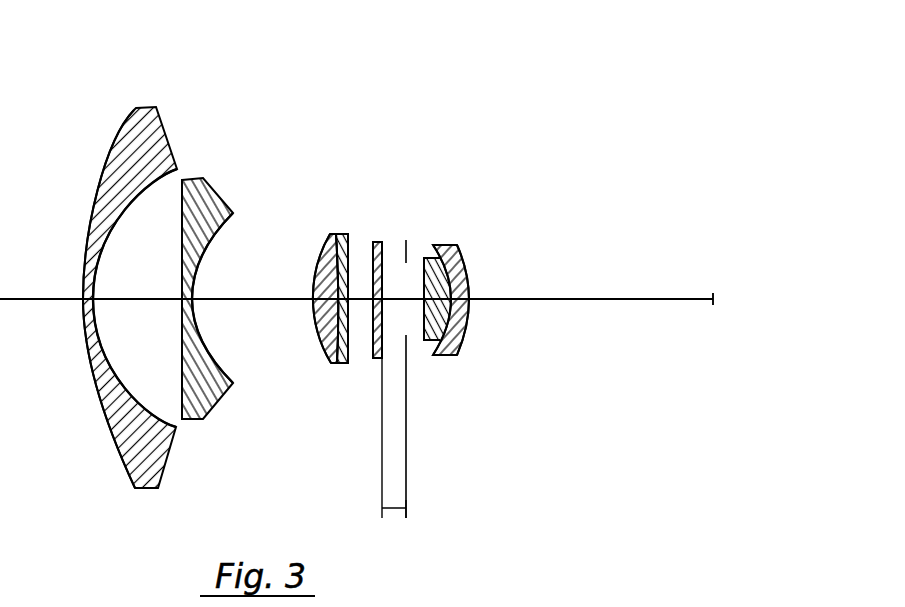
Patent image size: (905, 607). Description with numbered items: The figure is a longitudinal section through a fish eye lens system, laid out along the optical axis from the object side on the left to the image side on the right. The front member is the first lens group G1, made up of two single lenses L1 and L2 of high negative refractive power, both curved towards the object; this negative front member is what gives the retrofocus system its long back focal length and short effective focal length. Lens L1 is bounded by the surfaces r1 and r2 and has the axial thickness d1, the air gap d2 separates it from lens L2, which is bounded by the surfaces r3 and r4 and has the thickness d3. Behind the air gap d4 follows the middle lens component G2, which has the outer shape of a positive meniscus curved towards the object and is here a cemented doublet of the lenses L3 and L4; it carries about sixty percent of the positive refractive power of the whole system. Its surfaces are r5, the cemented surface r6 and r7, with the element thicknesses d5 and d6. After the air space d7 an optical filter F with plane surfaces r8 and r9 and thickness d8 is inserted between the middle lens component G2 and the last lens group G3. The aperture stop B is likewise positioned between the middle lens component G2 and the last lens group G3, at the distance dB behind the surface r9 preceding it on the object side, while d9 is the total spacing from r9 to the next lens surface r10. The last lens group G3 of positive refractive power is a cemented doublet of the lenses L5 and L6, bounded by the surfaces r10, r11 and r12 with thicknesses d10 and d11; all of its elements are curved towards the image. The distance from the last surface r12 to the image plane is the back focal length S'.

The first lens group G1 is at (265, 45).
The middle lens component G2 is at (355, 62).
The last lens group G3 is at (565, 60).
The first lens L1 is at (138, 265).
The second lens L2 is at (227, 241).
The third lens L3 is at (326, 213).
The fourth lens L4 is at (368, 210).
The fifth lens L5 is at (466, 207).
The sixth lens L6 is at (501, 207).
The first lens surface r1 is at (124, 135).
The second lens surface r2 is at (165, 158).
The third lens surface r3 is at (182, 198).
The fourth lens surface r4 is at (238, 220).
The fifth lens surface r5 is at (323, 242).
The sixth lens surface r6 is at (335, 234).
The seventh lens surface r7 is at (360, 268).
The eighth lens surface r8 is at (373, 242).
The ninth lens surface r9 is at (373, 243).
The tenth lens surface r10 is at (425, 258).
The eleventh lens surface r11 is at (474, 259).
The twelfth lens surface r12 is at (465, 268).
The optical filter F is at (380, 242).
The aperture stop B is at (407, 244).
The back focal length S' is at (650, 275).
The first axial distance d1 is at (85, 302).
The second axial distance d2 is at (134, 302).
The third axial distance d3 is at (192, 302).
The fourth axial distance d4 is at (262, 302).
The fifth axial distance d5 is at (327, 305).
The sixth axial distance d6 is at (358, 300).
The seventh axial distance d7 is at (376, 360).
The eighth axial distance d8 is at (382, 395).
The ninth axial distance d9 is at (400, 300).
The tenth axial distance d10 is at (448, 357).
The eleventh axial distance d11 is at (468, 312).
The aperture stop distance dB is at (393, 508).